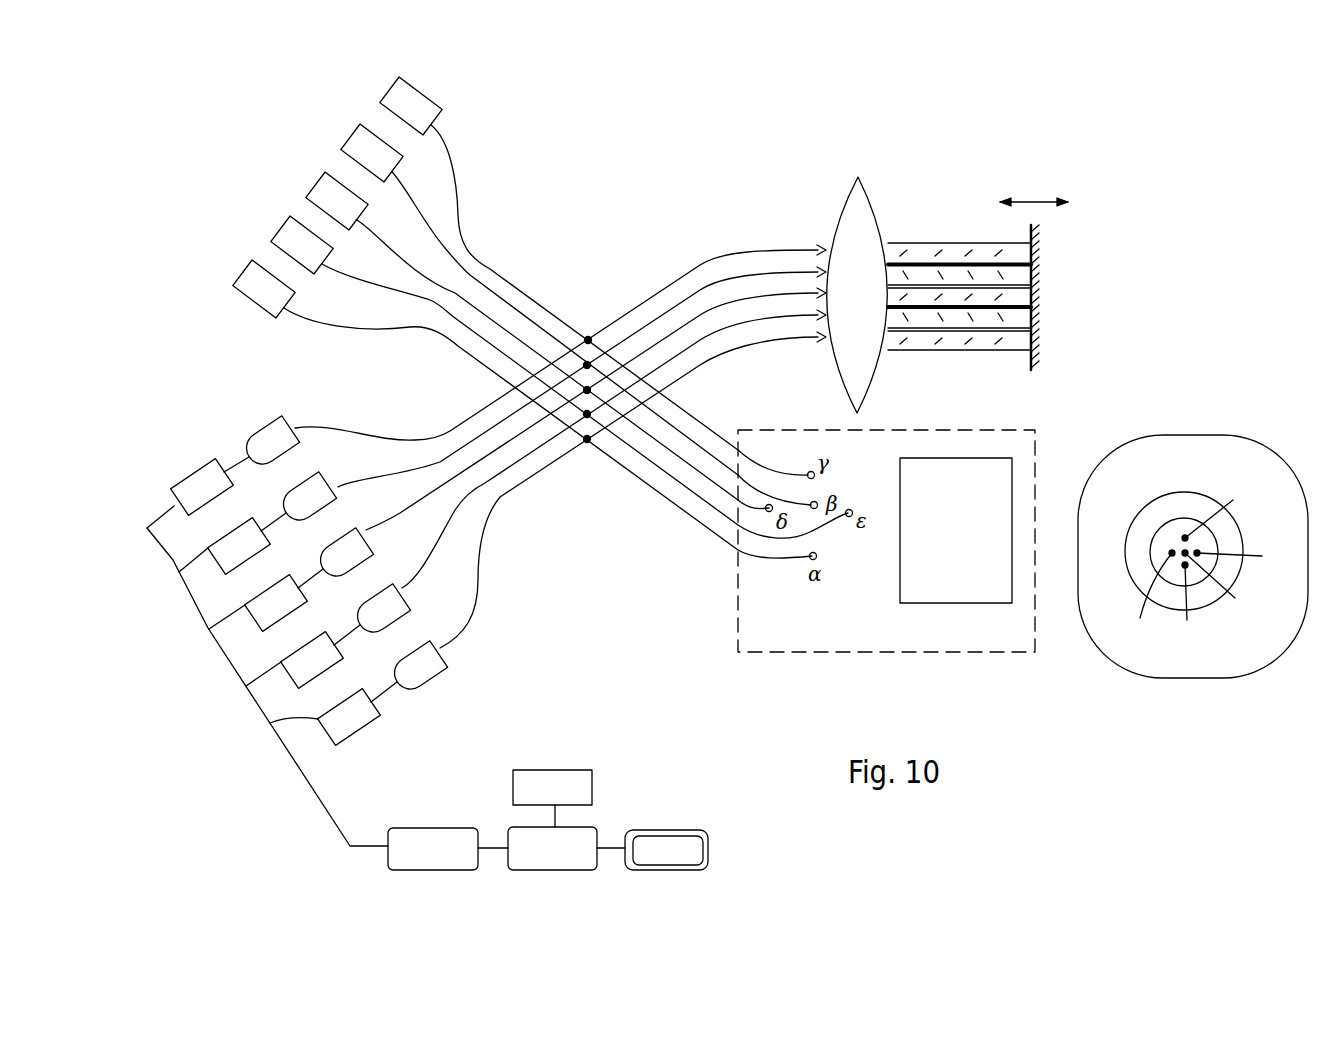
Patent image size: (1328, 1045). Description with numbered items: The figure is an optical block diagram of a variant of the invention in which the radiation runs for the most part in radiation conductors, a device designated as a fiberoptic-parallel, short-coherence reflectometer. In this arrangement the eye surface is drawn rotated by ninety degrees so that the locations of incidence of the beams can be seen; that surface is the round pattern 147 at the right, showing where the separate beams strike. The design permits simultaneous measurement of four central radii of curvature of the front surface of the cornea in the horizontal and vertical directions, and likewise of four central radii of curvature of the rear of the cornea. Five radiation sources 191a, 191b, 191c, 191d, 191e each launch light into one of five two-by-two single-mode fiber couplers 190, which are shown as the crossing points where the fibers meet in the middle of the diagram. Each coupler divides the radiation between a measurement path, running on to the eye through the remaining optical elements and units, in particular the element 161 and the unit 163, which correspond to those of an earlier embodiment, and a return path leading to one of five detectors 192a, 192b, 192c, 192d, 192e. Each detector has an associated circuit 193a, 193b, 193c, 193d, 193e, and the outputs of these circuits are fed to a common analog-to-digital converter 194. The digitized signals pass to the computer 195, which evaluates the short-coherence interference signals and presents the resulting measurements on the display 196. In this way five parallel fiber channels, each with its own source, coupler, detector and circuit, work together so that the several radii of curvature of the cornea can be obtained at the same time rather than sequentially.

The radiation source 191a is at (258, 288).
The radiation source 191b is at (296, 240).
The radiation source 191c is at (333, 195).
The radiation source 191d is at (368, 148).
The radiation source 191e is at (402, 96).
The detector 192a is at (443, 658).
The detector 192b is at (404, 593).
The detector 192c is at (342, 534).
The detector 192d is at (316, 472).
The detector 192e is at (277, 427).
The associated circuit 193a is at (274, 727).
The associated circuit 193b is at (248, 685).
The associated circuit 193c is at (212, 626).
The associated circuit 193d is at (180, 573).
The associated circuit 193e is at (173, 473).
The 2×2 single-mode fiber coupler 190 is at (590, 470).
The element corresponding to FIG. 7 161 is at (1044, 280).
The unit corresponding to FIG. 7 163 is at (980, 548).
The fiber end face 147 is at (1178, 681).
The analog-to-digital converter 194 is at (452, 861).
The computer 195 is at (573, 861).
The display 196 is at (672, 830).